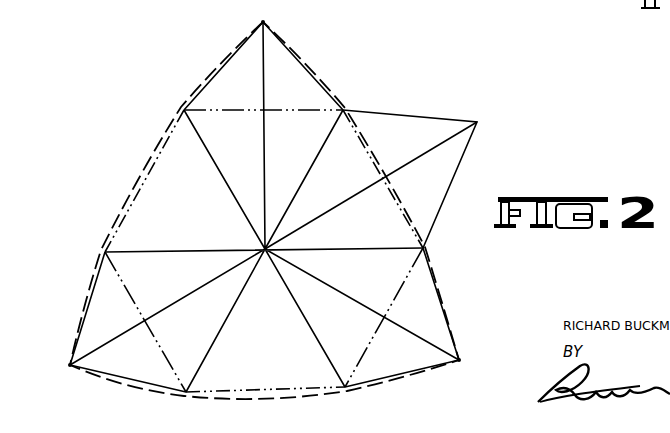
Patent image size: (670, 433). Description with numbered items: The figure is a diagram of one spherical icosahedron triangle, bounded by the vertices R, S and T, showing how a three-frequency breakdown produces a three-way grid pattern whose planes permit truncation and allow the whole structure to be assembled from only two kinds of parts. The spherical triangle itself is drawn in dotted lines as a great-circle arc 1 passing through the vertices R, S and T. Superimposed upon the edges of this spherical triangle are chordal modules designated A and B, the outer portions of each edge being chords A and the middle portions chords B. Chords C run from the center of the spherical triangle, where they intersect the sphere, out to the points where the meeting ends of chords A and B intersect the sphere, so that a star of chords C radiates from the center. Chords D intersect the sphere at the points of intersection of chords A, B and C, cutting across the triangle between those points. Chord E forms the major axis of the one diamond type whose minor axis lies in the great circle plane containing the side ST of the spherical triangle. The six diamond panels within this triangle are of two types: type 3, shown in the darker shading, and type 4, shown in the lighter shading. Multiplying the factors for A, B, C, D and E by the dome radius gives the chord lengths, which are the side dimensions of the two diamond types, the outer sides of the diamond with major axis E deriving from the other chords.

The chordal module A is at (222, 67).
The chordal module B is at (154, 165).
The chord C is at (217, 250).
The chord D is at (253, 109).
The chord E is at (364, 192).
The spherical triangle great-circle arc 1 is at (260, 398).
The diamond panel type 3 is at (243, 147).
The diamond panel type 4 is at (353, 245).
The vertex of spherical icosahedron triangle T is at (262, 13).
The vertex of spherical icosahedron triangle R is at (63, 366).
The vertex of spherical icosahedron triangle S is at (465, 367).